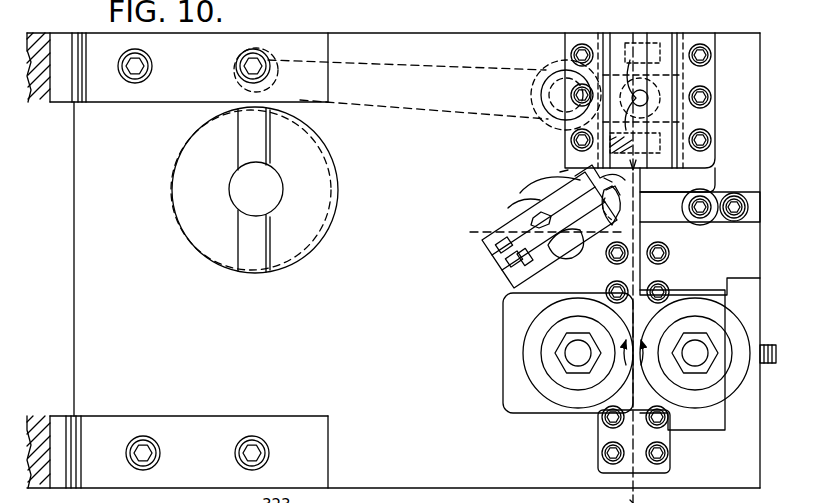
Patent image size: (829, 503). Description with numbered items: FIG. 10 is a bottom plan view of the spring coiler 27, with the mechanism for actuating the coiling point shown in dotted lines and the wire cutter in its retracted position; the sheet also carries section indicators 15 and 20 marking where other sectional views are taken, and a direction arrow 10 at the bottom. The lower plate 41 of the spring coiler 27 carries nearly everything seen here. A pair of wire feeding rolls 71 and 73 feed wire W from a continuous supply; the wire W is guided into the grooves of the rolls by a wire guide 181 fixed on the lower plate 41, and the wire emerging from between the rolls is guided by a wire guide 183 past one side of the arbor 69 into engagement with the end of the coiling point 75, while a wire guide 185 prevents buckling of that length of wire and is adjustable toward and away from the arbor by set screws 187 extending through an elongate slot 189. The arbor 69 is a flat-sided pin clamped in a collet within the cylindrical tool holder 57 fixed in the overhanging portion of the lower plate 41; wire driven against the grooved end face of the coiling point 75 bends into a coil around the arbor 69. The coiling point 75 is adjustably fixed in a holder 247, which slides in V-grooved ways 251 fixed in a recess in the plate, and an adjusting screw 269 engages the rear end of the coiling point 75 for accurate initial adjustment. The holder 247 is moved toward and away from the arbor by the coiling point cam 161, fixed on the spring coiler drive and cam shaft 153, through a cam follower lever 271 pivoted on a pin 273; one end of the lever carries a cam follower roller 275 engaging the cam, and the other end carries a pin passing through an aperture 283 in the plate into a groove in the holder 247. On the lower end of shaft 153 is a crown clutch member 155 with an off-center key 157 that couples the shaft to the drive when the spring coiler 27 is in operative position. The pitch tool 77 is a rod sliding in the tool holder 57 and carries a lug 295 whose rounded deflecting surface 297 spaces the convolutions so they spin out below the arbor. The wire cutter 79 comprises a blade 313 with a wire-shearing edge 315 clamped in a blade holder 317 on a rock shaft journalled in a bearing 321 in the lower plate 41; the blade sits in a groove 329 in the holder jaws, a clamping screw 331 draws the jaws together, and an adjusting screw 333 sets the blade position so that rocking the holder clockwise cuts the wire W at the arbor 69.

The machine 10 is at (485, 500).
The section line 15 is at (470, 232).
The section line 20 is at (800, 353).
The spring coiler 27 is at (453, 46).
The lower plate 41 is at (347, 291).
The cylindrical tool holder 57 is at (668, 178).
The arbor pin 69 is at (640, 198).
The wire feeding roll 71 is at (562, 398).
The wire feeding roll 73 is at (704, 405).
The coiling point 75 is at (670, 160).
The pitch tool 77 is at (636, 218).
The wire cutter 79 is at (556, 184).
The spring coiler drive and cam shaft 153 is at (278, 190).
The crown clutch member 155 is at (338, 195).
The off-center key 157 is at (263, 235).
The coiling point cam 161 is at (325, 152).
The wire guide 181 is at (604, 433).
The wire guide 183 is at (670, 275).
The wire guide 185 is at (678, 215).
The set screws 187 is at (716, 200).
The elongate slot 189 is at (718, 216).
The coiling point holder 247 is at (622, 45).
The V-grooved ways 251 is at (714, 46).
The adjusting screw 269 is at (643, 60).
The cam follower lever 271 is at (415, 107).
The pin 273 is at (538, 72).
The cam follower roller 275 is at (240, 78).
The aperture 283 is at (700, 87).
The lug 295 is at (636, 212).
The deflecting surface 297 is at (604, 242).
The blade 313 is at (548, 214).
The wire-shearing edge 315 is at (580, 149).
The blade holder 317 is at (524, 268).
The bearing 321 is at (518, 194).
The groove 329 is at (512, 210).
The clamping screw 331 is at (575, 175).
The adjusting screw 333 is at (504, 254).
The wire W is at (636, 487).